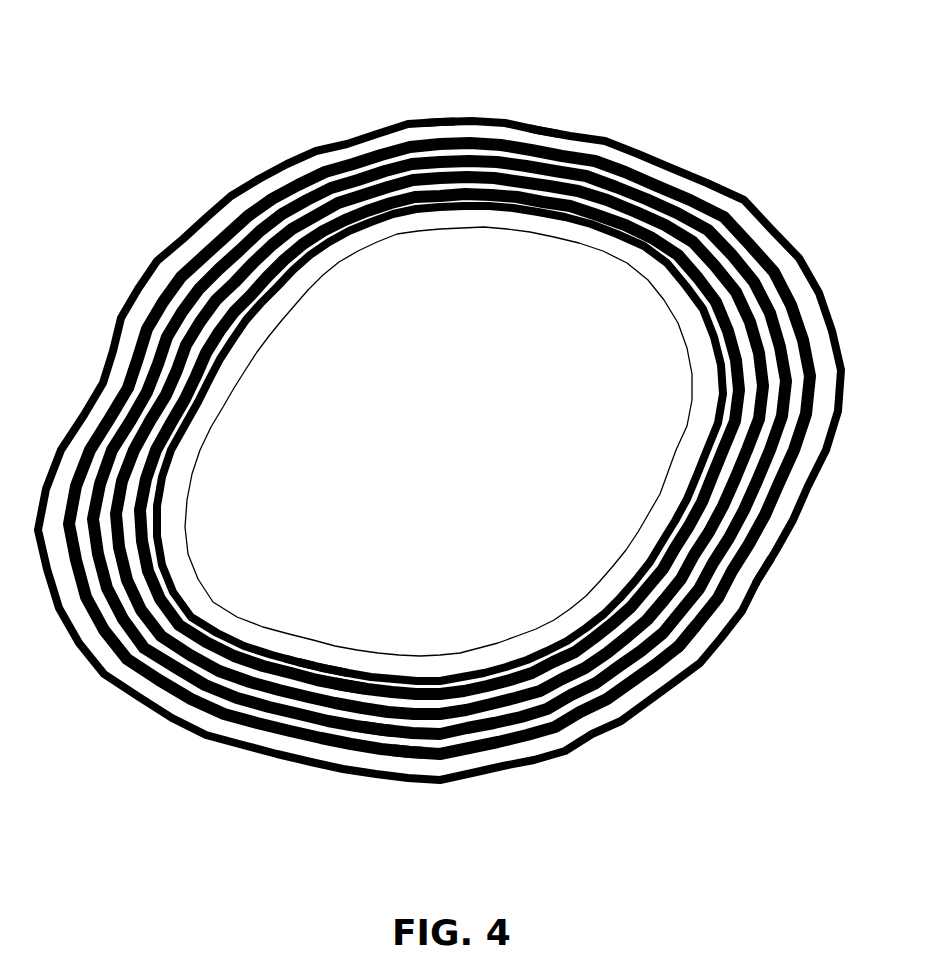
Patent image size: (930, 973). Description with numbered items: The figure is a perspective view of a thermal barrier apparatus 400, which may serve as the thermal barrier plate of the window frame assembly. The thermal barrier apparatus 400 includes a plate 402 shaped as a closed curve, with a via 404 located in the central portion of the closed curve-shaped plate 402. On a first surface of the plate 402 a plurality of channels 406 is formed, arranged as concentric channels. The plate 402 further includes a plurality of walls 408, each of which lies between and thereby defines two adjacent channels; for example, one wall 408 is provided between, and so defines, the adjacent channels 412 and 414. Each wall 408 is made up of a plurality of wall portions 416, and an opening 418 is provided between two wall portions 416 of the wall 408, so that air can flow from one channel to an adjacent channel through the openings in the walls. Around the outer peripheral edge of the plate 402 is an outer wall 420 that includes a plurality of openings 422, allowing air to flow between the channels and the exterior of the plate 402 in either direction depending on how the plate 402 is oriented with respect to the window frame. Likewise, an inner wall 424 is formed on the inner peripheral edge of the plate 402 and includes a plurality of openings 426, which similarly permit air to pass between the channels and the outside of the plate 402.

The thermal barrier apparatus 400 is at (158, 62).
The plate 402 is at (533, 776).
The via 404 is at (287, 413).
The channels 406 is at (673, 708).
The walls 408 is at (196, 713).
The channel 412 is at (744, 585).
The channel 414 is at (680, 638).
The wall portions 416 is at (347, 736).
The opening 418 is at (377, 762).
The outer wall 420 is at (445, 116).
The openings 422 is at (490, 116).
The inner wall 424 is at (332, 673).
The openings 426 is at (283, 658).